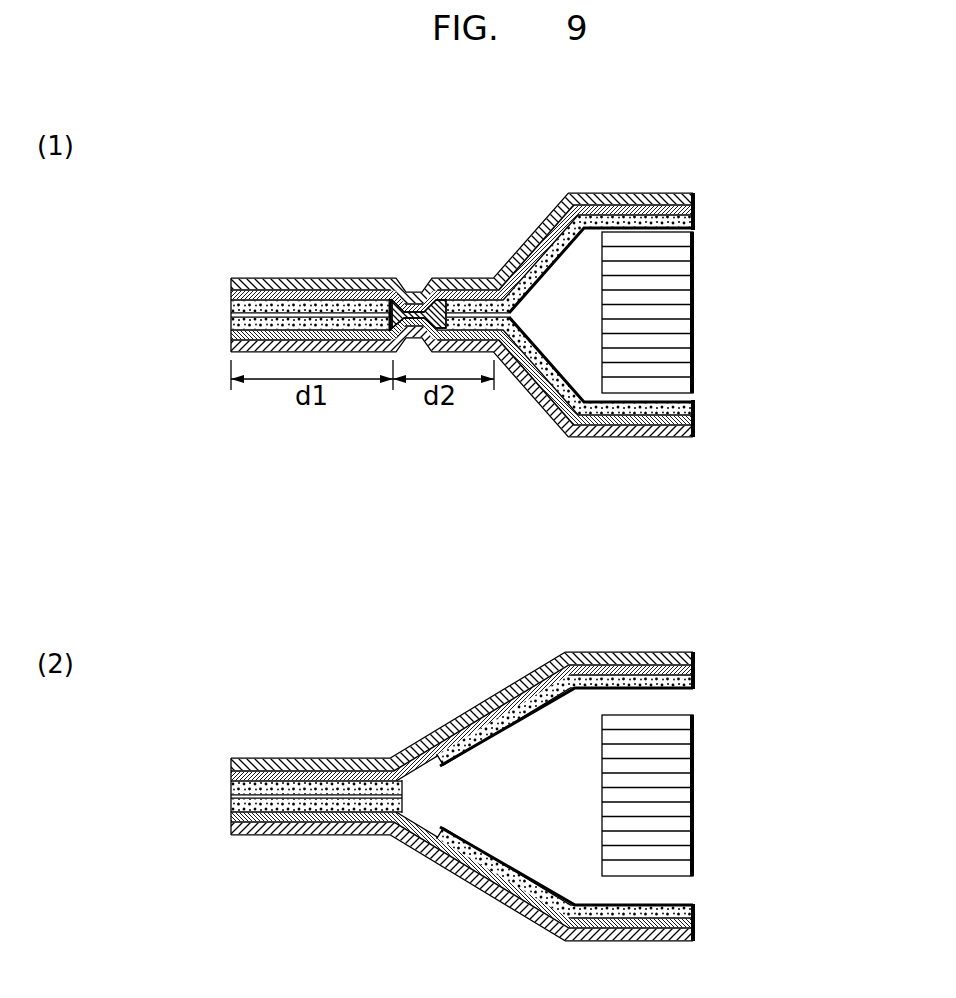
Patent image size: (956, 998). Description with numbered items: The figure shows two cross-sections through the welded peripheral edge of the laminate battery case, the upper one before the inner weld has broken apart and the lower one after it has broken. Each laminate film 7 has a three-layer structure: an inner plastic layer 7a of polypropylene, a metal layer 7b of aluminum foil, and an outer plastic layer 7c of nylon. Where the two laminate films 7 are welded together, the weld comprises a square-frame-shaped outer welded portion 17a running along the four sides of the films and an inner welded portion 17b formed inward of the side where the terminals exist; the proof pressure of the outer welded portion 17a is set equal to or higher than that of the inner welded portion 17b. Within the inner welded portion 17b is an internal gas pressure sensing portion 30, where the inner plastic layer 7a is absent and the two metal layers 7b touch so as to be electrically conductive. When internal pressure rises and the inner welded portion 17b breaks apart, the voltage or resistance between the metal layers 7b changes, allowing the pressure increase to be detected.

The laminate film 7 is at (792, 152).
The inner plastic layer 7a is at (230, 306).
The metal layer 7b is at (693, 210).
The outer plastic layer 7c is at (693, 192).
The outer welded portion 17a is at (393, 262).
The inner welded portion 17b is at (495, 262).
The internal gas pressure sensing portion 30 is at (413, 300).